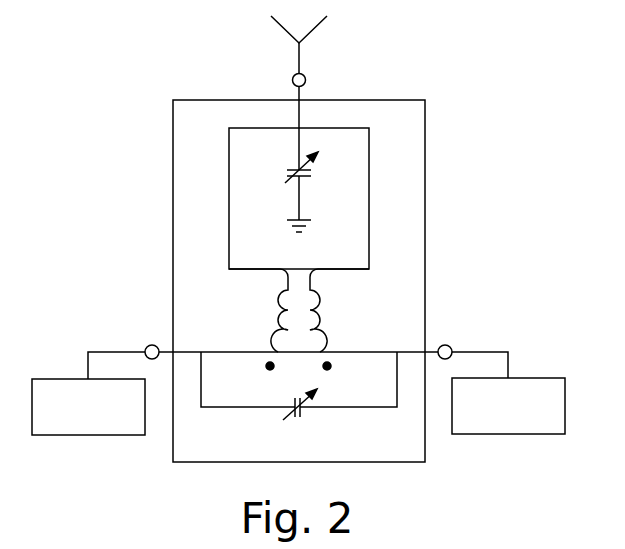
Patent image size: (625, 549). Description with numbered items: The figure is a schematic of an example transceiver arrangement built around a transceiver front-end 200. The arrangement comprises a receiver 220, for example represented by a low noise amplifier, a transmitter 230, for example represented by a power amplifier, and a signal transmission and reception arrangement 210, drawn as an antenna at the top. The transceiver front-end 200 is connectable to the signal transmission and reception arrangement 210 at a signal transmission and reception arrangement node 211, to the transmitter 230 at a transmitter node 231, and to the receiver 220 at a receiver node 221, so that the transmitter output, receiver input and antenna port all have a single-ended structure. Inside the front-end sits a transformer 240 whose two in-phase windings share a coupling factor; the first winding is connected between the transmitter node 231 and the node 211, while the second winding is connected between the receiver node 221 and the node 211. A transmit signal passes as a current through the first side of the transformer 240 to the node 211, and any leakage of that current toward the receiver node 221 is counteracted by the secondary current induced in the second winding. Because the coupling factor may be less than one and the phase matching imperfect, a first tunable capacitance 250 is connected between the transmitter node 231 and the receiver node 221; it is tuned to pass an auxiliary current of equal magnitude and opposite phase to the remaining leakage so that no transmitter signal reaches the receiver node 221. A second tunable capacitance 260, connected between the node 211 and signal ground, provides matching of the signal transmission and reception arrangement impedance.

The transceiver front-end 200 is at (425, 198).
The signal transmission and reception arrangement 210 is at (283, 29).
The signal transmission and reception arrangement node 211 is at (306, 81).
The receiver 220 is at (508, 393).
The receiver node 221 is at (452, 348).
The transmitter 230 is at (88, 393).
The transmitter node 231 is at (146, 348).
The transformer 240 is at (319, 309).
The first tunable capacitance 250 is at (290, 409).
The second tunable capacitance 260 is at (302, 178).